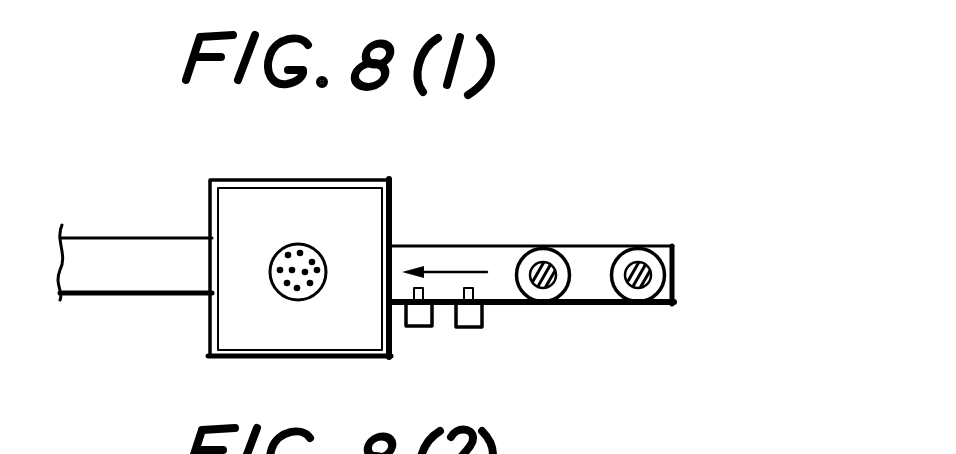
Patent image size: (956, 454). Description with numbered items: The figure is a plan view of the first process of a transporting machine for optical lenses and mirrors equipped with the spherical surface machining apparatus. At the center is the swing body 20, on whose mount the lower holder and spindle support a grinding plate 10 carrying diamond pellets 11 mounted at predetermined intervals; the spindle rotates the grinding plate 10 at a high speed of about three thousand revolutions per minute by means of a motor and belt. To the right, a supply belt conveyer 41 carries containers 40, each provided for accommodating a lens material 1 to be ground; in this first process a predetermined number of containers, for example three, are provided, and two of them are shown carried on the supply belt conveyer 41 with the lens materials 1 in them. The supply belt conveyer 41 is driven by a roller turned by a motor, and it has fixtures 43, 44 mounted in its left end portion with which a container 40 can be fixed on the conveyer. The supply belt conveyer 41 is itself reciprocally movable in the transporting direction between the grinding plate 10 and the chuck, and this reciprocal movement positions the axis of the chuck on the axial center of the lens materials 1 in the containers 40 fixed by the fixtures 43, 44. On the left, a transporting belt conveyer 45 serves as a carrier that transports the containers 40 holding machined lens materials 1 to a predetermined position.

The lens material 1 is at (591, 194).
The grinding plate 10 is at (316, 249).
The diamond pellets 11 is at (285, 257).
The swing body 20 is at (208, 330).
The container 40 is at (604, 377).
The supply belt conveyer 41 is at (453, 243).
The fixture 43 is at (420, 327).
The fixture 44 is at (472, 328).
The transporting belt conveyer 45 is at (118, 238).